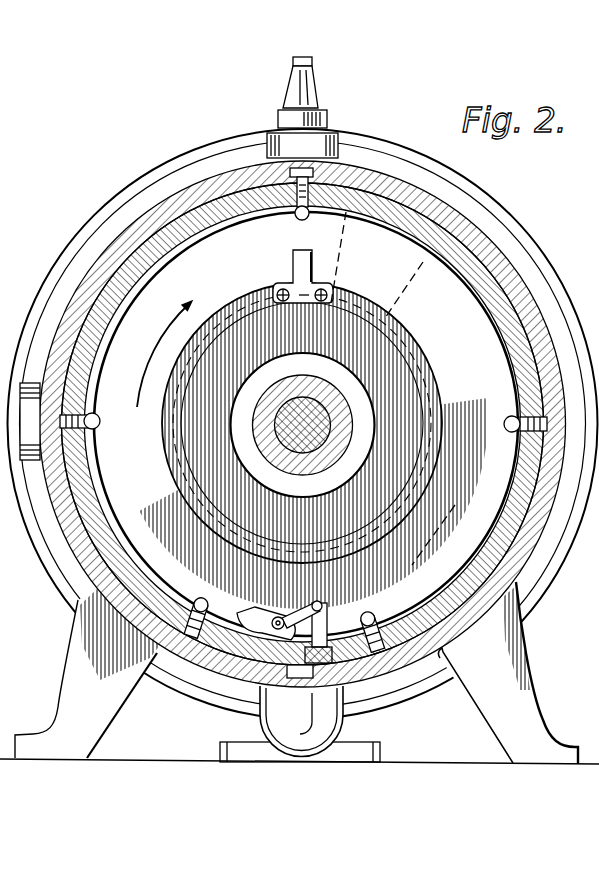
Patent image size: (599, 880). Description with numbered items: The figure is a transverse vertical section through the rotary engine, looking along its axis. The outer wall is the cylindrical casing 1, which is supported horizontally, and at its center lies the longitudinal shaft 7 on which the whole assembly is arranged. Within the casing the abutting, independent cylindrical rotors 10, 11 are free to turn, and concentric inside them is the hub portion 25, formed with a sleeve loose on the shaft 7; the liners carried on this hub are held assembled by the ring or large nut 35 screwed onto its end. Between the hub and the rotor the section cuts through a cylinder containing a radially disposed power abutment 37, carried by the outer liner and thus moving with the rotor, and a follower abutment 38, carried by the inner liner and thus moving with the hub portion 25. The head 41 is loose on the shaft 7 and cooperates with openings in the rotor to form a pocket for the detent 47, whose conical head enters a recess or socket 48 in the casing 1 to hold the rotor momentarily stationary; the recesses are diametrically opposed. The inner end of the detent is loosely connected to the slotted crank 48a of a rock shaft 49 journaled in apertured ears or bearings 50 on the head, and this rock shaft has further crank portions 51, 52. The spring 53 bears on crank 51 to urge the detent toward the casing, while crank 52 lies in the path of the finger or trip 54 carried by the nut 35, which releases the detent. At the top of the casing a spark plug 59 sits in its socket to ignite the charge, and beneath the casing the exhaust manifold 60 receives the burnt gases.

The cylindrical casing 1 is at (200, 200).
The longitudinal shaft 7 is at (330, 437).
The cylindrical rotor 10 is at (20, 361).
The cylindrical rotor 11 is at (187, 214).
The hub portion 25 is at (302, 423).
The ring or large nut 35 is at (228, 311).
The power abutment 37 is at (407, 283).
The follower abutment 38 is at (452, 548).
The head 41 is at (318, 478).
The detent 47 is at (337, 667).
The recess or socket 48 is at (304, 683).
The slotted crank 48a is at (290, 620).
The rock shaft 49 is at (262, 672).
The apertured ear or bearing 50 is at (272, 618).
The crank portion 51 is at (185, 624).
The crank portion 52 is at (262, 612).
The spring 53 is at (200, 667).
The finger or trip 54 is at (292, 263).
The spark plug 59 is at (315, 98).
The exhaust manifold 60 is at (297, 740).